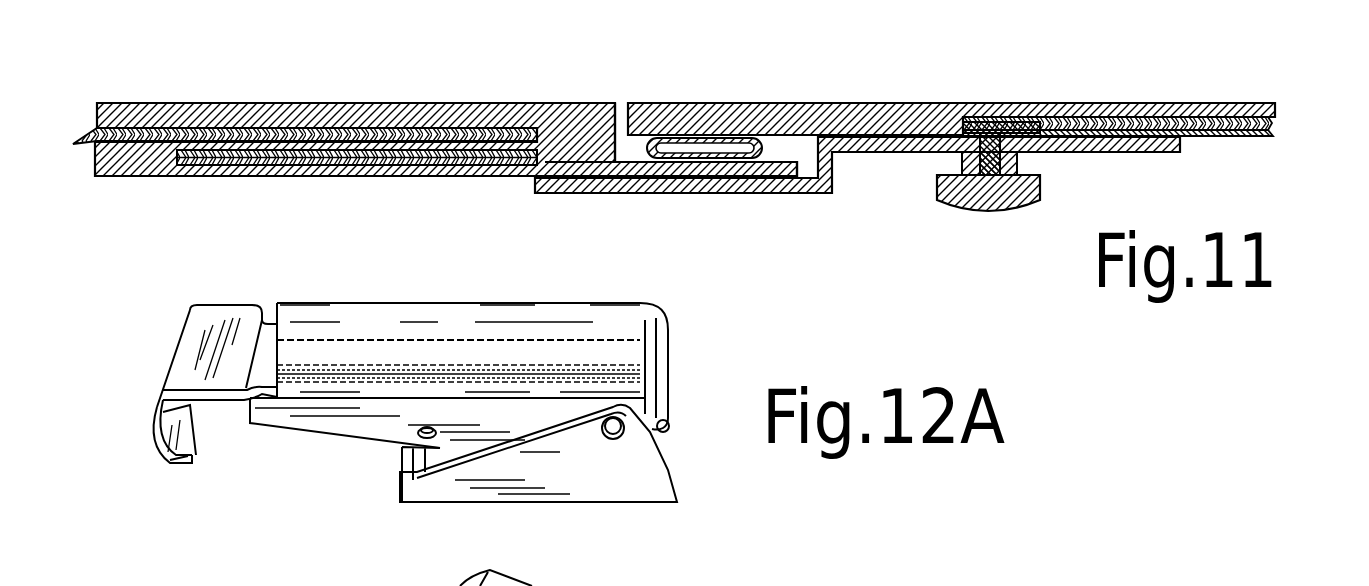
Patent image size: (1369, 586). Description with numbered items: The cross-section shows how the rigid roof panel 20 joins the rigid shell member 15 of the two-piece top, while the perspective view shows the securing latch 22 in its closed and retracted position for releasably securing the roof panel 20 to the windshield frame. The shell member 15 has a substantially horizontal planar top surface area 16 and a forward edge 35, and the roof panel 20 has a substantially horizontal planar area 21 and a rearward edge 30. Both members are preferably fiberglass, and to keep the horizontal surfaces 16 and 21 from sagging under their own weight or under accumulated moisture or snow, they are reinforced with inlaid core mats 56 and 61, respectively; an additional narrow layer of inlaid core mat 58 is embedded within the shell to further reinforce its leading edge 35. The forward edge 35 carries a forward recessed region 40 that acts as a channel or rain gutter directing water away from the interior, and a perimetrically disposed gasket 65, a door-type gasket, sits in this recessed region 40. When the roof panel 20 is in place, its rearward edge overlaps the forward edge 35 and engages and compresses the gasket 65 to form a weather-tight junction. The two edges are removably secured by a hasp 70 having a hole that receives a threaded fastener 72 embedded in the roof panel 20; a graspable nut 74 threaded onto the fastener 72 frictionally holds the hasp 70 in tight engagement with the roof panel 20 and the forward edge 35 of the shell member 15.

In FIG. 11, the rigid shell member 15 is at (186, 101).
In FIG. 11, the top surface area 16 is at (282, 103).
In FIG. 11, the inlaid core mat 56 is at (92, 136).
In FIG. 11, the inlaid core mat 58 is at (218, 158).
In FIG. 11, the forward edge 35 is at (612, 103).
In FIG. 11, the forward recessed region 40 is at (628, 160).
In FIG. 11, the rearward edge 30 is at (677, 103).
In FIG. 11, the rigid roof panel 20 is at (1134, 101).
In FIG. 11, the horizontal planar area 21 is at (1198, 101).
In FIG. 11, the inlaid core mat 61 is at (1278, 123).
In FIG. 11, the gasket 65 is at (745, 148).
In FIG. 11, the hasp 70 is at (712, 194).
In FIG. 11, the threaded fastener 72 is at (987, 103).
In FIG. 11, the graspable nut 74 is at (1043, 182).
In FIG. 12A, the latch 22 is at (166, 474).